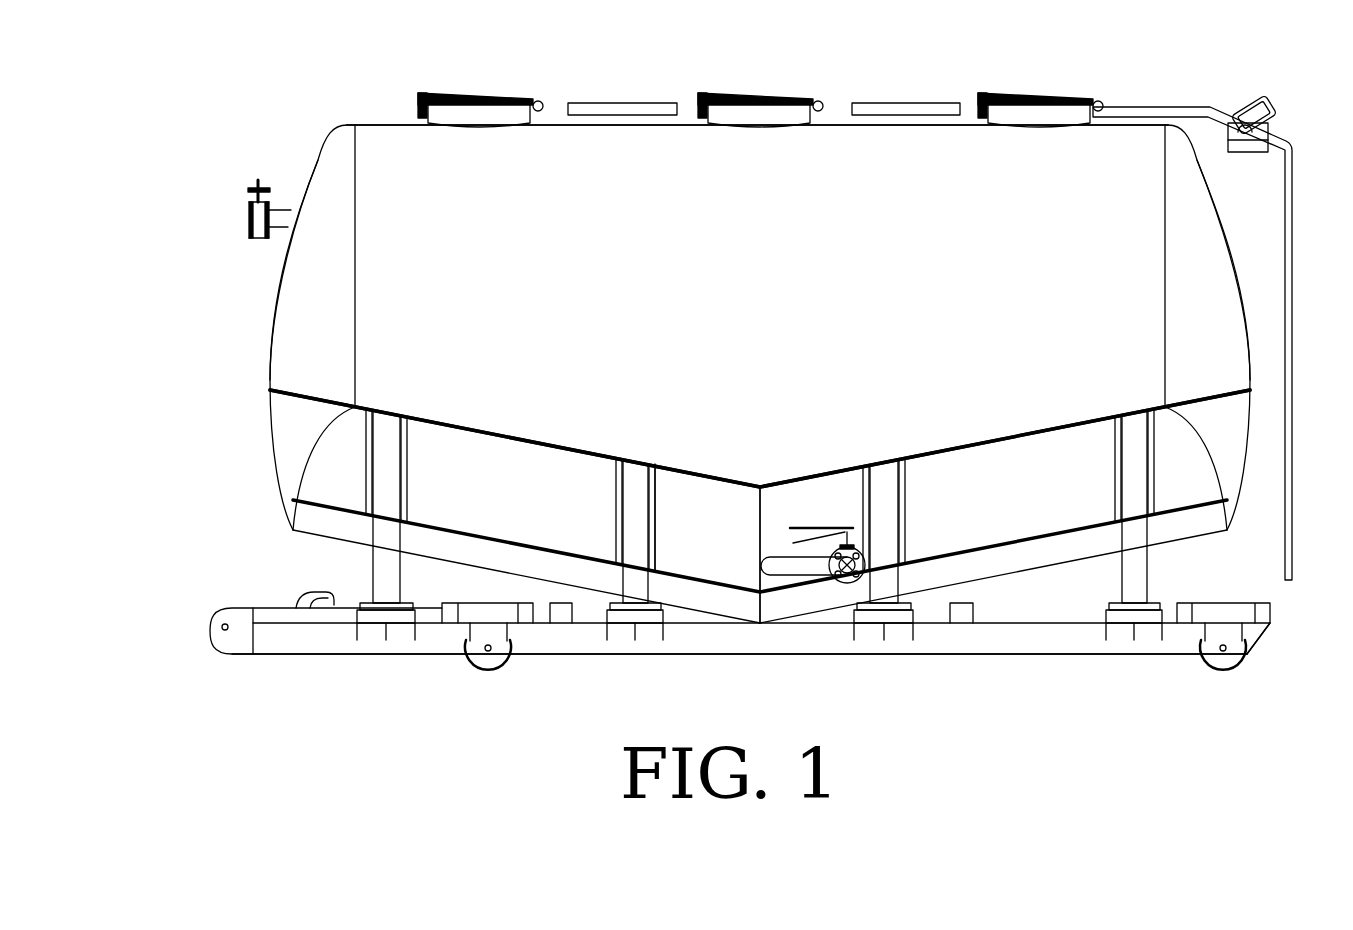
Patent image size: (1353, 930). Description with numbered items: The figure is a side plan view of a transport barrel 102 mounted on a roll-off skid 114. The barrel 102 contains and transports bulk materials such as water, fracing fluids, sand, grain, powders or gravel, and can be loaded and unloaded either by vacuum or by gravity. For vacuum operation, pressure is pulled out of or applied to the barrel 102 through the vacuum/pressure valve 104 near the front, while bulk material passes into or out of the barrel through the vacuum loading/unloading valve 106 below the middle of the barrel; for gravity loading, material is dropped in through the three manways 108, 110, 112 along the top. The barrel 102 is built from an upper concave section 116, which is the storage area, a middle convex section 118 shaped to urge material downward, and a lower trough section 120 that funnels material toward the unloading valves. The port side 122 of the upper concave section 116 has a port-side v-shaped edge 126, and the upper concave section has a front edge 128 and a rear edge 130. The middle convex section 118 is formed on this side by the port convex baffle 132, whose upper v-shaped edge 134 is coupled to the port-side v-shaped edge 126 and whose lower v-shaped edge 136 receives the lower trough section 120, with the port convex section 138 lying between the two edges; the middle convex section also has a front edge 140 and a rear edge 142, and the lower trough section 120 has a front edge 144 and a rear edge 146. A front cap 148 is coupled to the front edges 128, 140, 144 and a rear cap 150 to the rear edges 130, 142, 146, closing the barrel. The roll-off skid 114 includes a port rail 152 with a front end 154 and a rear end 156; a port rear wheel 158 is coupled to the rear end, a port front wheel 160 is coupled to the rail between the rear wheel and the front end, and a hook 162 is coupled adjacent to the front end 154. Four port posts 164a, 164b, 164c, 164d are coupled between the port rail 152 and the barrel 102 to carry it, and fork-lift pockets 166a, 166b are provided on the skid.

The barrel 102 is at (388, 124).
The vacuum/pressure valve 104 is at (258, 182).
The vacuum loading/unloading valve 106 is at (847, 528).
The manway 108 is at (482, 92).
The manway 110 is at (757, 92).
The manway 112 is at (1038, 92).
The roll-off skid 114 is at (790, 654).
The upper concave section 116 is at (790, 227).
The middle convex section 118 is at (730, 546).
The lower trough section 120 is at (740, 614).
The port side 122 is at (785, 352).
The port-side v-shaped edge 126 is at (832, 472).
The upper concave section front edge 128 is at (357, 262).
The upper concave section rear edge 130 is at (1165, 312).
The port convex baffle 132 is at (466, 484).
The upper v-shaped edge 134 is at (598, 460).
The lower v-shaped edge 136 is at (614, 560).
The port convex section 138 is at (537, 519).
The middle convex section front edge 140 is at (303, 462).
The middle convex section rear edge 142 is at (1210, 450).
The lower trough section front edge 144 is at (290, 515).
The lower trough section rear edge 146 is at (1227, 508).
The front cap 148 is at (338, 310).
The rear cap 150 is at (1228, 310).
The port rail 152 is at (1015, 654).
The front end 154 is at (210, 625).
The rear end 156 is at (1262, 630).
The port rear wheel 158 is at (1222, 671).
The port front wheel 160 is at (486, 672).
The hook 162 is at (318, 600).
The port post 164a is at (373, 578).
The port post 164b is at (622, 590).
The port post 164c is at (900, 577).
The port post 164d is at (1122, 545).
The fork-lift pocket 166a is at (550, 624).
The fork-lift pocket 166b is at (960, 624).